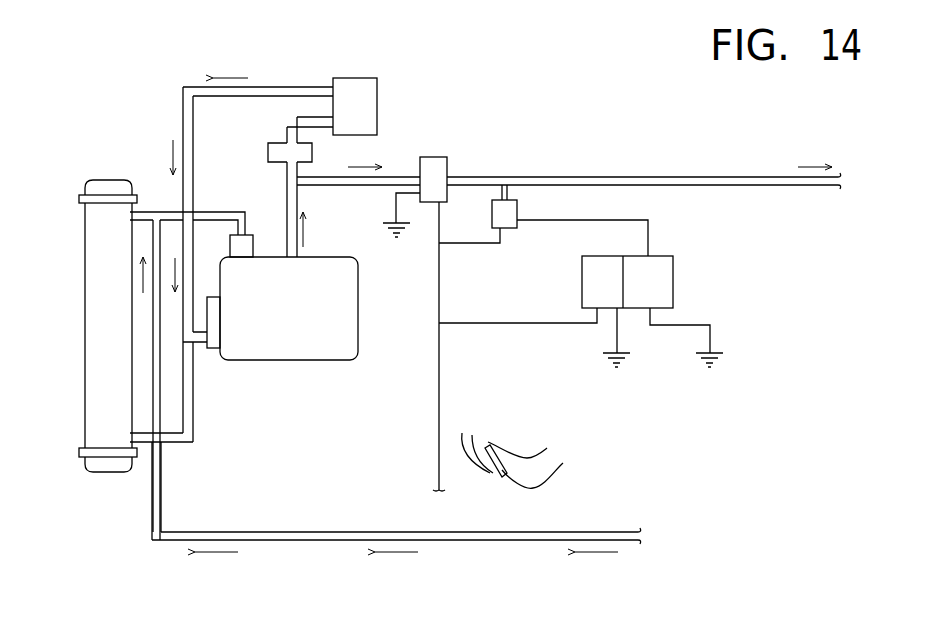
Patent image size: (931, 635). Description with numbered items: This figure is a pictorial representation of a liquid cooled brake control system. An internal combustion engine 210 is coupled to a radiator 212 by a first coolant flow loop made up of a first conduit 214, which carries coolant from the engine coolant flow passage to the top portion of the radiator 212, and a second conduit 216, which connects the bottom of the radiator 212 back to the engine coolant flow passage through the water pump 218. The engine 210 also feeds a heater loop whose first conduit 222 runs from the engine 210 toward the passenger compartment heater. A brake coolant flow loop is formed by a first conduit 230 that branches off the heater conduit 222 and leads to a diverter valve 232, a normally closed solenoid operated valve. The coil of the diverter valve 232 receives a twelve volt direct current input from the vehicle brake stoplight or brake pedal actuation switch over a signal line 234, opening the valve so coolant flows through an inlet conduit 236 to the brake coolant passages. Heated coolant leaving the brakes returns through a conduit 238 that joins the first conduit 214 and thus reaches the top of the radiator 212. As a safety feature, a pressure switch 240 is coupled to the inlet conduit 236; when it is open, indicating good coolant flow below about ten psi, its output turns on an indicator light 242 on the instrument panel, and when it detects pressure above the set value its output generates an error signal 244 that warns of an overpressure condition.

The internal combustion engine 210 is at (312, 347).
The radiator 212 is at (103, 257).
The first conduit 214 is at (167, 213).
The second conduit 216 is at (188, 417).
The water pump 218 is at (214, 348).
The first conduit of the second fluid flow loop 222 is at (297, 193).
The first conduit of the brake coolant flow loop 230 is at (456, 158).
The diverter valve 232 is at (437, 165).
The signal line 234 is at (437, 420).
The inlet conduit 236 is at (685, 176).
The conduit 238 is at (488, 541).
The pressure switch 240 is at (505, 224).
The light 242 is at (641, 310).
The error signal 244 is at (583, 262).